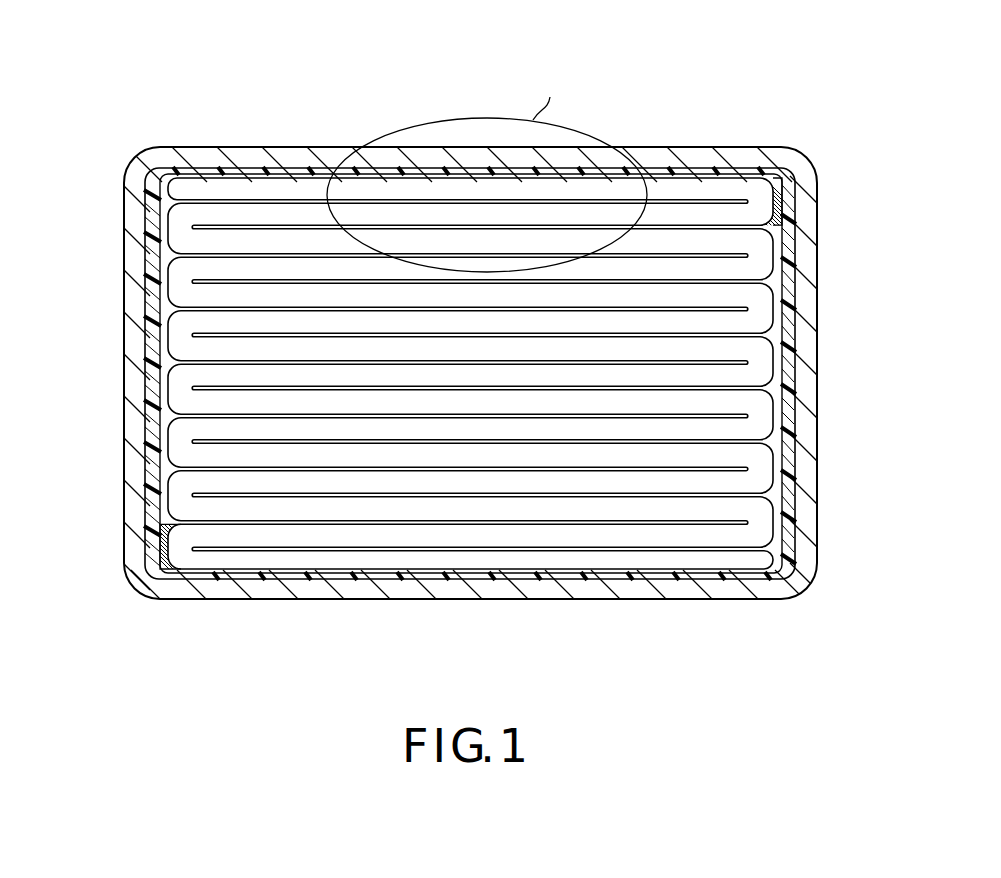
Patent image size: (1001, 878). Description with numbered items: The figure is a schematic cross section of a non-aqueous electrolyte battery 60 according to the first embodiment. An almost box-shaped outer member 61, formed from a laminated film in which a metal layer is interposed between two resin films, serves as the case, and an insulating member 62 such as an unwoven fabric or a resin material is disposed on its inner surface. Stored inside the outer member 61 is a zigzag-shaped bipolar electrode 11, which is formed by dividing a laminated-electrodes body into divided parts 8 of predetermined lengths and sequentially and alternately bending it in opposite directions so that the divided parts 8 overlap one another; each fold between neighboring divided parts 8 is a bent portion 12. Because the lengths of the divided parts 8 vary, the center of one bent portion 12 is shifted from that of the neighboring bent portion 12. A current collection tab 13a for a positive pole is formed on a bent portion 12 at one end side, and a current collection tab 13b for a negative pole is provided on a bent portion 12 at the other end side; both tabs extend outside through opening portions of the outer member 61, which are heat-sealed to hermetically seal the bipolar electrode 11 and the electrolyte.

The non-aqueous electrolyte battery 60 is at (470, 335).
The outer member 61 is at (249, 160).
The insulating member 62 is at (745, 173).
The divided parts 8 is at (683, 217).
The bent portion 12 is at (177, 225).
The bipolar electrode 11 is at (522, 563).
The current collection tab for a positive pole 13a is at (787, 203).
The current collection tab for a negative pole 13b is at (157, 545).